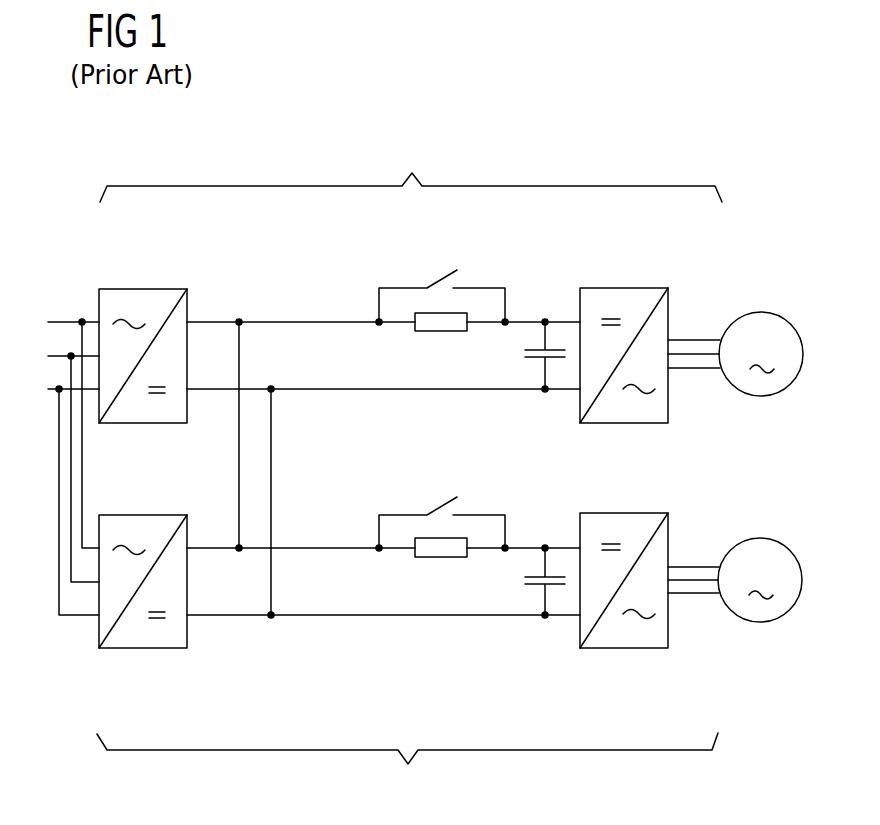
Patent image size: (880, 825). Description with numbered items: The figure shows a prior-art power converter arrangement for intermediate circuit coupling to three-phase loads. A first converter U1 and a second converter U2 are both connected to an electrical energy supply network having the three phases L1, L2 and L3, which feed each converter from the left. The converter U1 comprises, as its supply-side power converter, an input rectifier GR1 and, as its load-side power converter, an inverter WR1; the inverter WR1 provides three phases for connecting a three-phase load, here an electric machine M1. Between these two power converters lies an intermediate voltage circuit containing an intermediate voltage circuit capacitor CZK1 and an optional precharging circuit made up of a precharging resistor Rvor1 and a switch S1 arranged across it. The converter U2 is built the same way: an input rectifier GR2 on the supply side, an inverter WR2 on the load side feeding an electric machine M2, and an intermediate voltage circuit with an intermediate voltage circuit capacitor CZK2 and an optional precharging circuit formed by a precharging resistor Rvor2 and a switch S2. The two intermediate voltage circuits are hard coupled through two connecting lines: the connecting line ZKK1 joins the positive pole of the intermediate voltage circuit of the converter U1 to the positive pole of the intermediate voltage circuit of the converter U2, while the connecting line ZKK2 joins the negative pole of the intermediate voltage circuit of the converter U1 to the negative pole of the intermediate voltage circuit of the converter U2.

The first converter U1 is at (411, 169).
The second converter U2 is at (407, 767).
The input rectifier GR1 is at (141, 288).
The input rectifier GR2 is at (140, 650).
The inverter WR1 is at (621, 288).
The inverter WR2 is at (620, 650).
The electric machine M1 is at (757, 312).
The electric machine M2 is at (757, 538).
The switch S1 is at (440, 270).
The switch S2 is at (440, 498).
The precharging resistor Rvor1 is at (427, 310).
The precharging resistor Rvor2 is at (440, 560).
The intermediate voltage circuit capacitor CZK1 is at (532, 366).
The intermediate voltage circuit capacitor CZK2 is at (532, 592).
The connecting line ZKK1 is at (238, 472).
The connecting line ZKK2 is at (271, 427).
The phase L1 is at (59, 427).
The phase L2 is at (59, 460).
The phase L3 is at (59, 493).